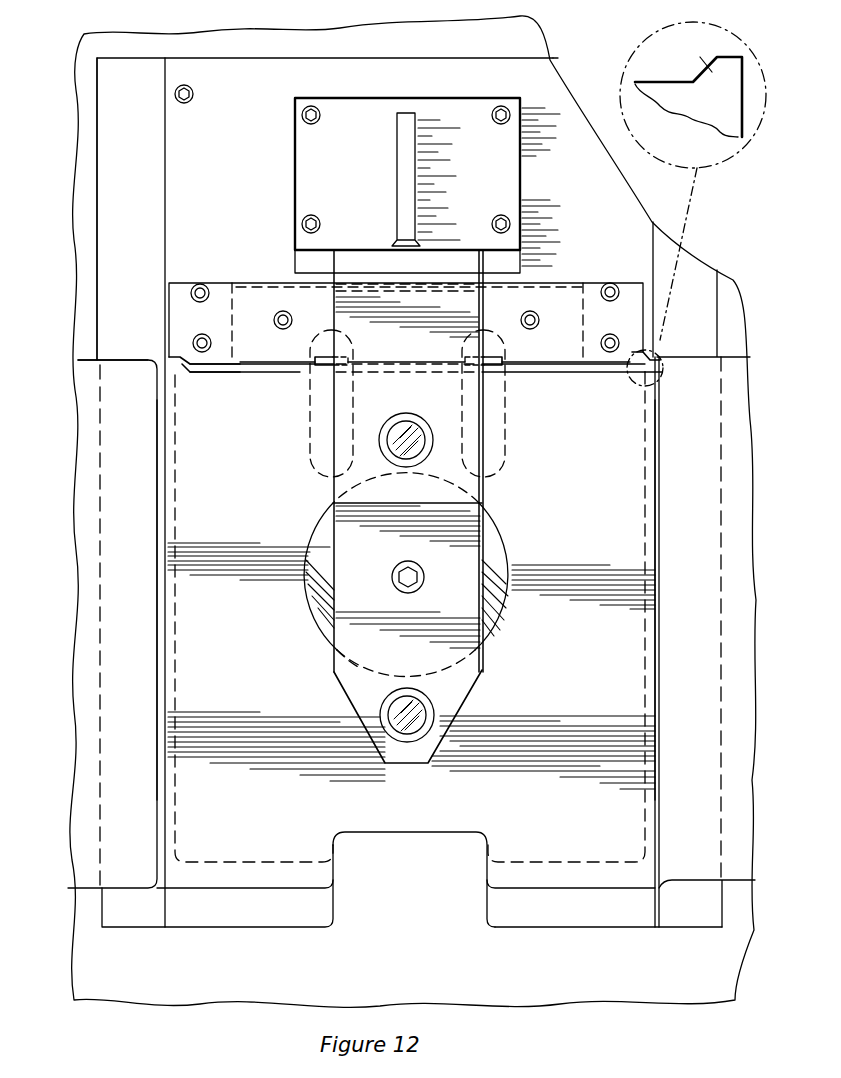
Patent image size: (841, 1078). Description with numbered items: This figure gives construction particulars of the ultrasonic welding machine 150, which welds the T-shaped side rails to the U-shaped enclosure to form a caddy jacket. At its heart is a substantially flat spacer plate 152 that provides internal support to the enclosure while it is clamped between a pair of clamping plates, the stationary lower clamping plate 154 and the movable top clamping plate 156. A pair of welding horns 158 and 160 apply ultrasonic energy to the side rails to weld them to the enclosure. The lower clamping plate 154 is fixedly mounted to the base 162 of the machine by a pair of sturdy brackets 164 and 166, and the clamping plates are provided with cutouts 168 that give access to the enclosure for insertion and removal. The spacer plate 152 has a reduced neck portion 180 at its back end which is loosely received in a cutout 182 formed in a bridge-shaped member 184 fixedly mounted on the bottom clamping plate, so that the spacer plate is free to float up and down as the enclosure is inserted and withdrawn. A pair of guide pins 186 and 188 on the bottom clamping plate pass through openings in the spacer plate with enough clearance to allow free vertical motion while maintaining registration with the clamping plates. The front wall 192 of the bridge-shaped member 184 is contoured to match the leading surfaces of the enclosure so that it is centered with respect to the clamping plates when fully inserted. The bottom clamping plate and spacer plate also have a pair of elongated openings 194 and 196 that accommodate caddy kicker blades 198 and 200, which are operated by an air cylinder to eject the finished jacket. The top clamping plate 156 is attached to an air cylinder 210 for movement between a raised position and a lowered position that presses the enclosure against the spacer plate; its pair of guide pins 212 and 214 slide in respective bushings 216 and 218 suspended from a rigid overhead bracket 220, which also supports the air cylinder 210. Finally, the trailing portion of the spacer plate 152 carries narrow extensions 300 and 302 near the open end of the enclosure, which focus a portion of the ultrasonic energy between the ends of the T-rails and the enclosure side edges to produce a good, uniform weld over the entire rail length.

The ultrasonic welding machine 150 is at (638, 1047).
The spacer plate 152 is at (717, 115).
The lower clamping plate 154 is at (523, 917).
The top clamping plate 156 is at (218, 895).
The welding horn 158 is at (150, 668).
The welding horn 160 is at (680, 703).
The base 162 is at (705, 997).
The bracket 164 is at (133, 928).
The bracket 166 is at (668, 917).
The cutouts 168 is at (386, 836).
The reduced neck portion 180 is at (567, 283).
The cutout 182 is at (230, 310).
The bridge-shaped member 184 is at (183, 292).
The guide pin 186 is at (283, 308).
The guide pin 188 is at (531, 308).
The front wall 192 is at (283, 370).
The elongated opening 194 is at (310, 440).
The elongated opening 196 is at (505, 413).
The caddy kicker blade 198 is at (320, 357).
The caddy kicker blade 200 is at (500, 358).
The air cylinder 210 is at (505, 540).
The guide pin 212 is at (424, 713).
The guide pin 214 is at (413, 450).
The bushing 216 is at (434, 722).
The bushing 218 is at (407, 413).
The overhead bracket 220 is at (337, 657).
The narrow extension 300 is at (178, 358).
The narrow extension 302 is at (662, 277).